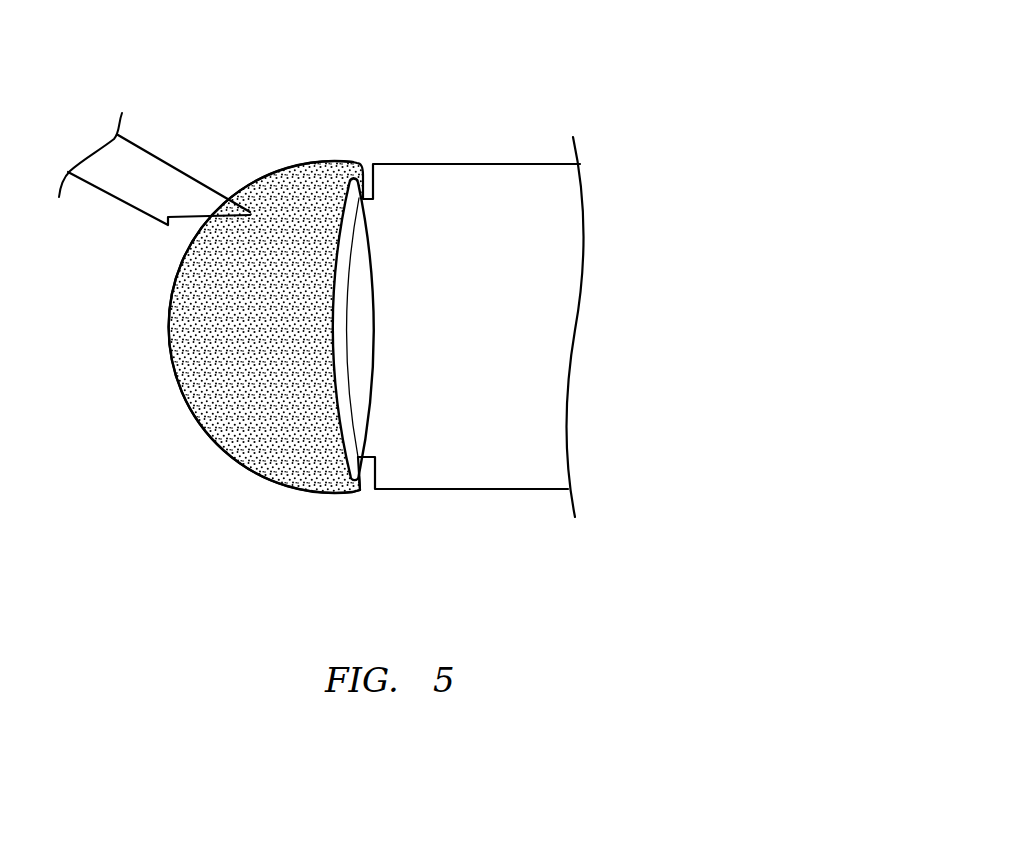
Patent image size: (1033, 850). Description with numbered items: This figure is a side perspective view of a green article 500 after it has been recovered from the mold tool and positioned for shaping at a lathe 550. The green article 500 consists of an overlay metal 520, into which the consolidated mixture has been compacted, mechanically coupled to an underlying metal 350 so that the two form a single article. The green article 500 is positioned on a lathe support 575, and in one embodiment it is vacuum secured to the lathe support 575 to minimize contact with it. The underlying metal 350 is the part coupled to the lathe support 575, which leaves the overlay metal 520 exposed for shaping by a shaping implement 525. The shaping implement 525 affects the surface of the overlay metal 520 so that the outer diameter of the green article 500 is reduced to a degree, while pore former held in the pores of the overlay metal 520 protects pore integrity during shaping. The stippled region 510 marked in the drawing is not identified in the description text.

The lathe 550 is at (642, 60).
The green article 500 is at (248, 460).
The stippled lens body surface 510 is at (220, 383).
The overlay metal 520 is at (358, 486).
The underlying metal 350 is at (364, 172).
The lathe support 575 is at (477, 190).
The shaping implement 525 is at (147, 162).